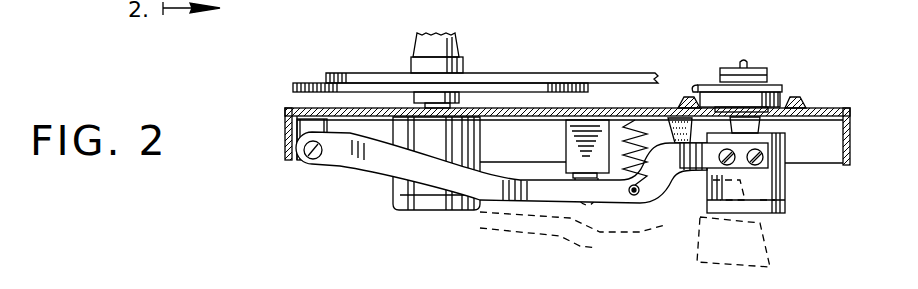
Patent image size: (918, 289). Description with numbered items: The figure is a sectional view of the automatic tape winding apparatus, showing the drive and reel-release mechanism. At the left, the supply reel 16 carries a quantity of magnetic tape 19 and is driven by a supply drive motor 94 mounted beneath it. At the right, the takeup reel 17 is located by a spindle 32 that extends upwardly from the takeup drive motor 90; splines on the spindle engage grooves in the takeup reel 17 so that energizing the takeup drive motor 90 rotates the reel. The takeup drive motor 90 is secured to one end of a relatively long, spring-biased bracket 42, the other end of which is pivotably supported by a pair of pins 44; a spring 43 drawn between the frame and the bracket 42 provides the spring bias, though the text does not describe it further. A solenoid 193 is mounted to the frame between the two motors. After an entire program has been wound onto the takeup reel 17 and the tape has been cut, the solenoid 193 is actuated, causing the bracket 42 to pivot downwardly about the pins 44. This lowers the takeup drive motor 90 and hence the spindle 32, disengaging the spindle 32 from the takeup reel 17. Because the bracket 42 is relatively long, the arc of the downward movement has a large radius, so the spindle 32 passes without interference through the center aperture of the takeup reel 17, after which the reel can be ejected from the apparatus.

The supply reel 16 is at (297, 80).
The takeup reel 17 is at (776, 86).
The magnetic tape 19 is at (367, 70).
The spindle 32 is at (744, 58).
The spring-biased bracket 42 is at (365, 157).
The return spring 43 is at (645, 140).
The pins 44 is at (300, 165).
The takeup drive motor 90 is at (780, 182).
The supply drive motor 94 is at (398, 212).
The solenoid 193 is at (590, 135).